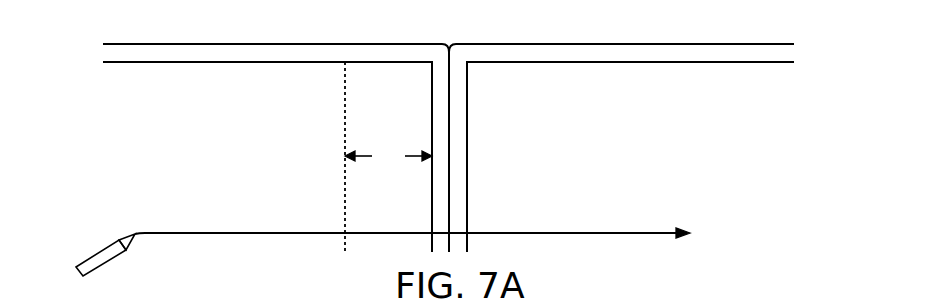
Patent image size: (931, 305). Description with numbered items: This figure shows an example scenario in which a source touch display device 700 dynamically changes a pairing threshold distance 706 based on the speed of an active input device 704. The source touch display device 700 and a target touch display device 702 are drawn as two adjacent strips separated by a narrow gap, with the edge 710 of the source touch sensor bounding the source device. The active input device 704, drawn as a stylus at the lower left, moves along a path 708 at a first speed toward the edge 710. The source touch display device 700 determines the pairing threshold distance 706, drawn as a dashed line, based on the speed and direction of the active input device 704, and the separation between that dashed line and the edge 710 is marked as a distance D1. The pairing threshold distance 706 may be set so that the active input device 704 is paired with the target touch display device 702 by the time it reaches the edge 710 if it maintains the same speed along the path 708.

The source touch display device 700 is at (155, 32).
The target touch display device 702 is at (770, 32).
The active input device 704 is at (84, 275).
The pairing threshold distance 706 is at (345, 108).
The path 708 is at (207, 237).
The edge 710 is at (432, 220).
The distance D1 is at (388, 157).